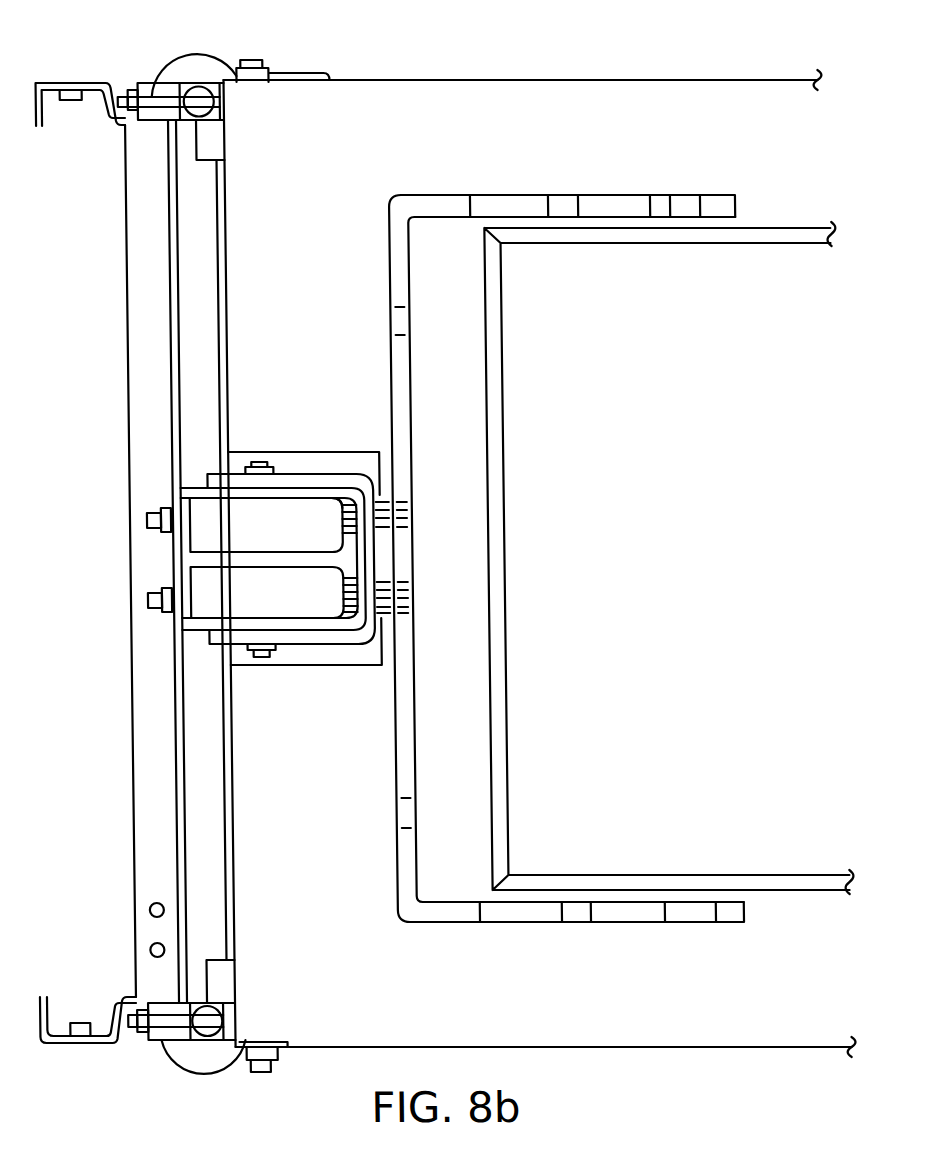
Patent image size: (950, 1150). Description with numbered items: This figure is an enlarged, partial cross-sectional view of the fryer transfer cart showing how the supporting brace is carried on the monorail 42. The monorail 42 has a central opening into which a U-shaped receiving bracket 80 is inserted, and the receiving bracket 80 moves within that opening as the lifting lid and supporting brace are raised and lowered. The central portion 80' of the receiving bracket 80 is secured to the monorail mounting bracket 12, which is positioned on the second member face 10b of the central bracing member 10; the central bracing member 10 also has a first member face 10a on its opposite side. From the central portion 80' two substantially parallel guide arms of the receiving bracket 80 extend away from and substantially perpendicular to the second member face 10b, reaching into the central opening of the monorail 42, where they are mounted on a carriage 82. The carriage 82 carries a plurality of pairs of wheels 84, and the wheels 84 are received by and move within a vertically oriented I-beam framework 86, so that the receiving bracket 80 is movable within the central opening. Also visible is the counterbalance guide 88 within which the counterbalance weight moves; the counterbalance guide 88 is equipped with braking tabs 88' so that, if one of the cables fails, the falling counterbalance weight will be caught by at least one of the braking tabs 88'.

The central bracing member 10 is at (586, 540).
The first member face 10a is at (414, 330).
The second member face 10b is at (393, 320).
The monorail mounting bracket 12 is at (384, 535).
The monorail 42 is at (301, 666).
The U-shaped receiving bracket 80 is at (326, 563).
The central portion 80' is at (327, 559).
The carriage 82 is at (278, 498).
The wheels 84 is at (221, 516).
The I-beam framework 86 is at (195, 557).
The counterbalance guide 88 is at (76, 66).
The braking tabs 88' is at (77, 129).